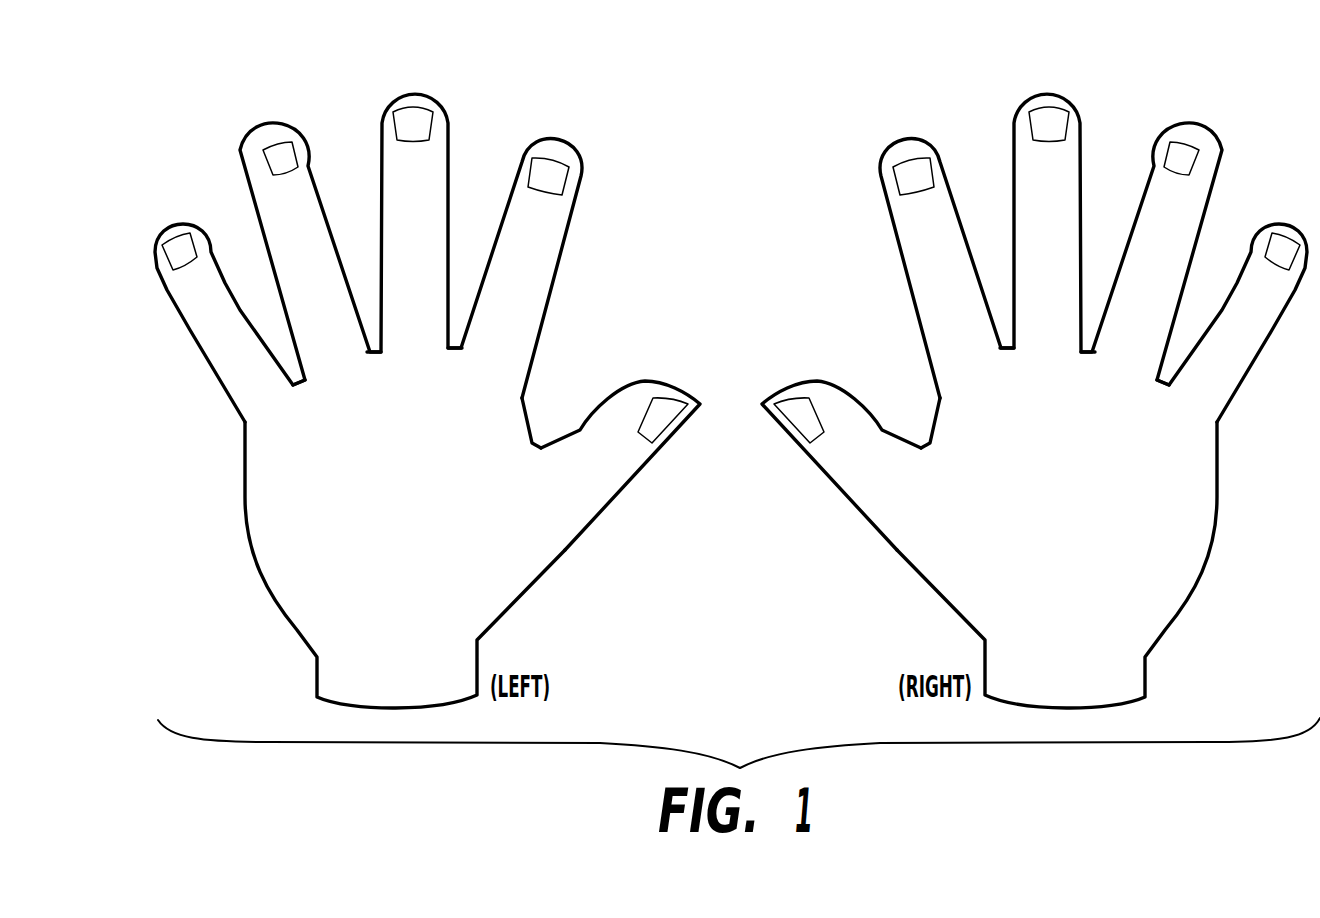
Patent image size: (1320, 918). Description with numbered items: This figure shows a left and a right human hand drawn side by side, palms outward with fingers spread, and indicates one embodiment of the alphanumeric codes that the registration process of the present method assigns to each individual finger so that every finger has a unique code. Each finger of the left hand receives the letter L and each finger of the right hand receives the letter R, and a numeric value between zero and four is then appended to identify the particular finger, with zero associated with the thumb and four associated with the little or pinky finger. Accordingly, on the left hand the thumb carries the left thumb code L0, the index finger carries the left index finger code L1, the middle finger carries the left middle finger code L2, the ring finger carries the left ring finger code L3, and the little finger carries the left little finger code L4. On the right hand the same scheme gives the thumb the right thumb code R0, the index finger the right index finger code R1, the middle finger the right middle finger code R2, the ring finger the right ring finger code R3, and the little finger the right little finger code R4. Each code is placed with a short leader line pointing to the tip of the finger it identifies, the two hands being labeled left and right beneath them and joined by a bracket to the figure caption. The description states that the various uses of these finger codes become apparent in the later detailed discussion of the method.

The left thumb code L0 is at (650, 382).
The left index finger code L1 is at (553, 140).
The left middle finger code L2 is at (413, 90).
The left ring finger code L3 is at (268, 123).
The left little finger code L4 is at (172, 223).
The right thumb code R0 is at (807, 382).
The right index finger code R1 is at (903, 138).
The right middle finger code R2 is at (1050, 88).
The right ring finger code R3 is at (1185, 123).
The right little finger code R4 is at (1290, 222).